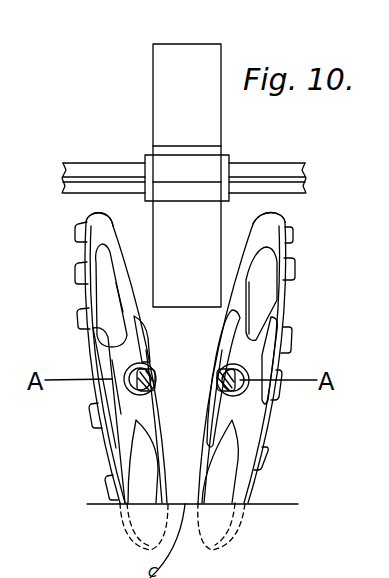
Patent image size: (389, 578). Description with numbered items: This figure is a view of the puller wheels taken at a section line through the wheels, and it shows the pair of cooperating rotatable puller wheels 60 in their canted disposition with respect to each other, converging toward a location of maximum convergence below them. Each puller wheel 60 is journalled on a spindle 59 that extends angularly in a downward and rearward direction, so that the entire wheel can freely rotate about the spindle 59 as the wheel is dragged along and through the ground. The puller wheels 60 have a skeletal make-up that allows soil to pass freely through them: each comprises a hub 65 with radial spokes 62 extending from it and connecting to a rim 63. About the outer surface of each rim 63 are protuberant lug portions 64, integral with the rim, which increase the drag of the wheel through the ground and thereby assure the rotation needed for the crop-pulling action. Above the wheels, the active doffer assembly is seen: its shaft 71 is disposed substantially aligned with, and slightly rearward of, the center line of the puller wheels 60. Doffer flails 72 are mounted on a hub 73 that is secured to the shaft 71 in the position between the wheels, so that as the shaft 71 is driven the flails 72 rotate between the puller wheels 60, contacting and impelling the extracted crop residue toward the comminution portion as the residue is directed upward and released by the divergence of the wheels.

The spindle 59 is at (222, 372).
The puller wheel 60 is at (87, 250).
The radial spokes 62 is at (155, 446).
The rim 63 is at (90, 214).
The protuberant lug portions 64 is at (76, 285).
The hub 65 is at (247, 394).
The shaft 71 is at (268, 166).
The doffer flails 72 is at (160, 83).
The hub 73 is at (145, 159).